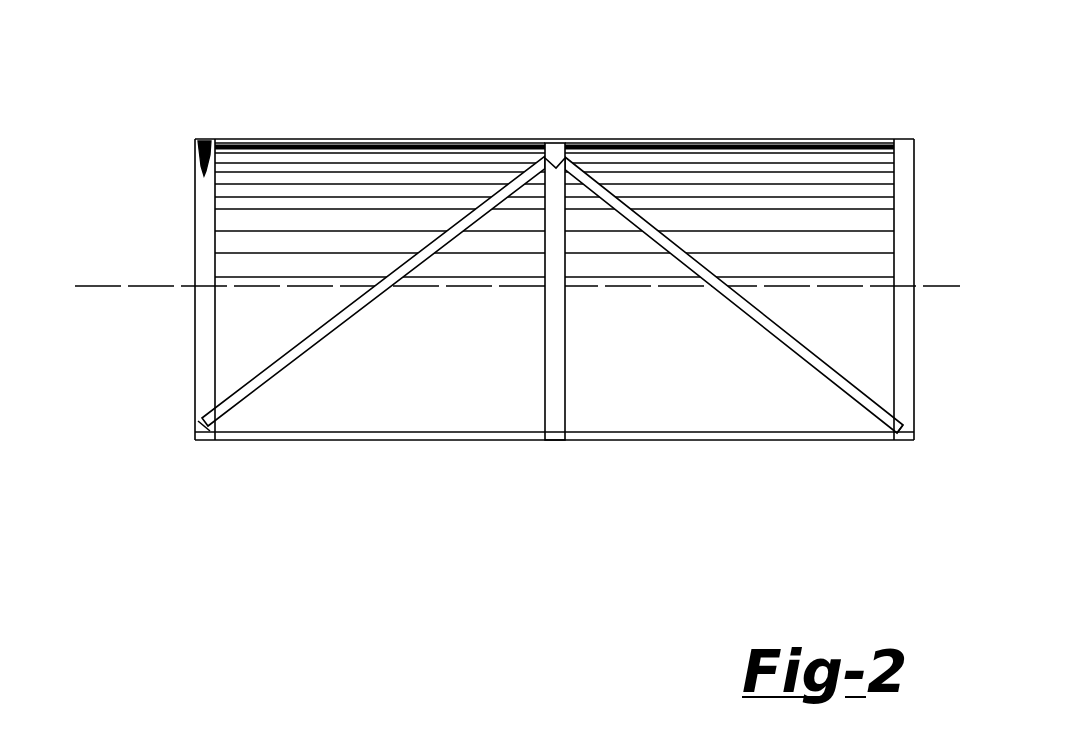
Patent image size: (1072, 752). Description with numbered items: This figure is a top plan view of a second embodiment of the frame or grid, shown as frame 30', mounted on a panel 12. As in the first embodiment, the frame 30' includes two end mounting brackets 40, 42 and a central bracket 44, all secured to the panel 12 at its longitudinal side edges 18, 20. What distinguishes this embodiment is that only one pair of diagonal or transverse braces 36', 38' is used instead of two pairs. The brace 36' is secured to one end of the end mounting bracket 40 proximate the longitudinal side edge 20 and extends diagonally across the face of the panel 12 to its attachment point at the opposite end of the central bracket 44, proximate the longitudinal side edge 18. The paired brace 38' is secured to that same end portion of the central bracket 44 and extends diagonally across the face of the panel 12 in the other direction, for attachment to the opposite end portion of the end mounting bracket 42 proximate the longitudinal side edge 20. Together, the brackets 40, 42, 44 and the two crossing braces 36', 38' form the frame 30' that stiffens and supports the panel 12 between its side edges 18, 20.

The panel 12 is at (791, 135).
The longitudinal side edge 18 is at (455, 139).
The longitudinal side edge 20 is at (417, 440).
The frame 30' is at (179, 95).
The brace 36' is at (371, 293).
The brace 38' is at (734, 295).
The end mounting bracket 40 is at (202, 353).
The end mounting bracket 42 is at (906, 372).
The central bracket 44 is at (565, 340).